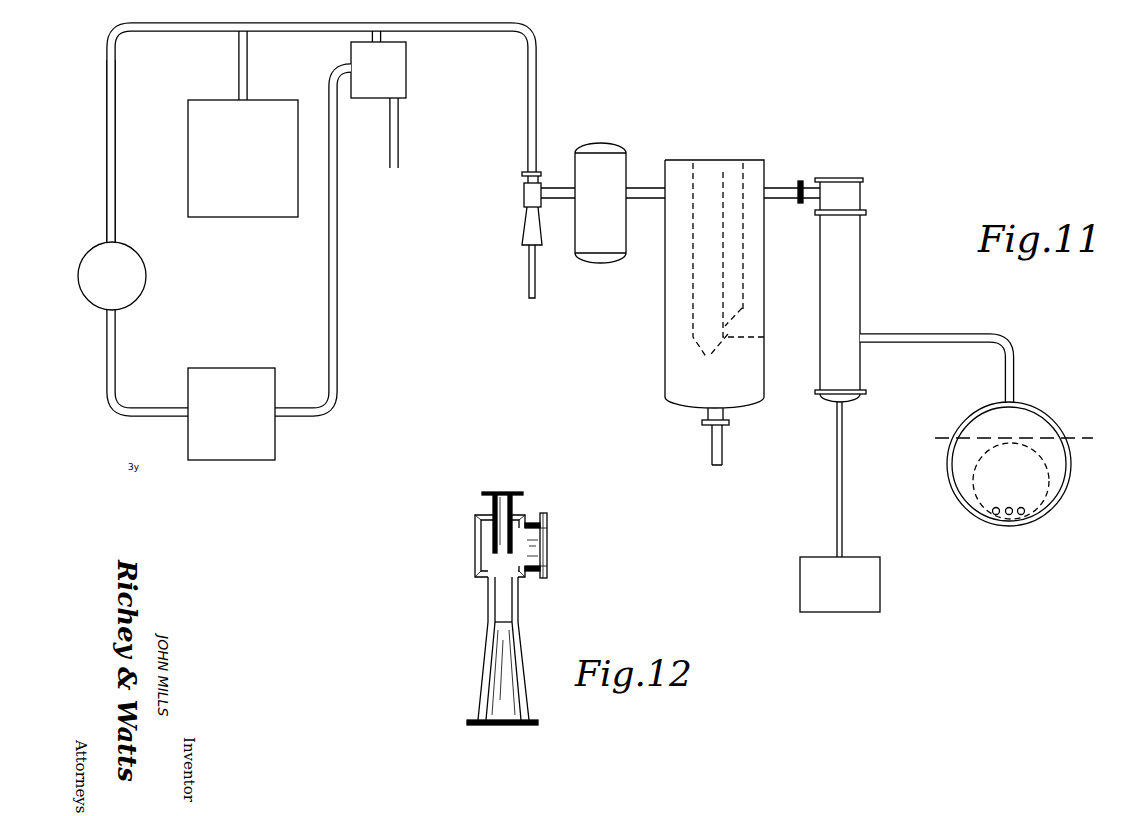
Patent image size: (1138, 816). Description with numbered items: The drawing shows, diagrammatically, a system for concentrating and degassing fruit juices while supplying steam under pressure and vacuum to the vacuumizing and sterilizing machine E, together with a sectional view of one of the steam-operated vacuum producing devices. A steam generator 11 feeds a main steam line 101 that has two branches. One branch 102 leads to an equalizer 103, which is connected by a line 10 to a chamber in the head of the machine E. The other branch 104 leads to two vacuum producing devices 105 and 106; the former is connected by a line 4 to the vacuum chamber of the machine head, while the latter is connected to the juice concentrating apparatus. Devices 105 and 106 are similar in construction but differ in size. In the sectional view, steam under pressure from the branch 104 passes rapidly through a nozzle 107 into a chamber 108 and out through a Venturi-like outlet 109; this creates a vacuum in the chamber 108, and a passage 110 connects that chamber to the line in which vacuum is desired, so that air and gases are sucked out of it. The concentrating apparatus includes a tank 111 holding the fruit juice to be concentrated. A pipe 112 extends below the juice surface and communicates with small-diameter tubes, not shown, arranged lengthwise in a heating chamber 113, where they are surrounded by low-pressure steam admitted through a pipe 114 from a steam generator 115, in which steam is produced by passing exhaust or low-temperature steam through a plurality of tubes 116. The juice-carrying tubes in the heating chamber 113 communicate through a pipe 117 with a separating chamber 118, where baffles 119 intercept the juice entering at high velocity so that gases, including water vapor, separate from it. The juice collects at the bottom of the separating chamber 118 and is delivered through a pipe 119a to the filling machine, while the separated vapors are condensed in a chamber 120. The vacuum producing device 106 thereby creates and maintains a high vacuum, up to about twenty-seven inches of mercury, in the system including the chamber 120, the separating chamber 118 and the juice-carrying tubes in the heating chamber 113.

In FIG. 11, the line 4 is at (334, 368).
In FIG. 11, the line 10 is at (133, 412).
In FIG. 11, the steam generator 11 is at (243, 158).
In FIG. 11, the vacuumizing and sterilizing machine E is at (239, 425).
In FIG. 11, the main steam line 101 is at (242, 60).
In FIG. 11, the branch 102 is at (108, 197).
In FIG. 11, the equalizer 103 is at (125, 277).
In FIG. 11, the branch 104 is at (457, 27).
In FIG. 11, the vacuum producing device 105 is at (386, 78).
In FIG. 11, the vacuum producing device 106 is at (530, 193).
In FIG. 12, the nozzle 107 is at (505, 494).
In FIG. 12, the chamber 108 is at (477, 548).
In FIG. 12, the Venturi-like outlet 109 is at (493, 625).
In FIG. 12, the passage 110 is at (537, 551).
In FIG. 11, the tank 111 is at (868, 573).
In FIG. 11, the pipe 112 is at (842, 498).
In FIG. 11, the heating chamber 113 is at (860, 280).
In FIG. 11, the pipe 114 is at (997, 333).
In FIG. 11, the steam generator 115 is at (1040, 417).
In FIG. 11, the tubes 116 is at (1027, 511).
In FIG. 11, the pipe 117 is at (782, 192).
In FIG. 11, the separating chamber 118 is at (675, 355).
In FIG. 11, the baffles 119 is at (728, 270).
In FIG. 11, the pipe 119a is at (712, 444).
In FIG. 11, the chamber 120 is at (597, 167).